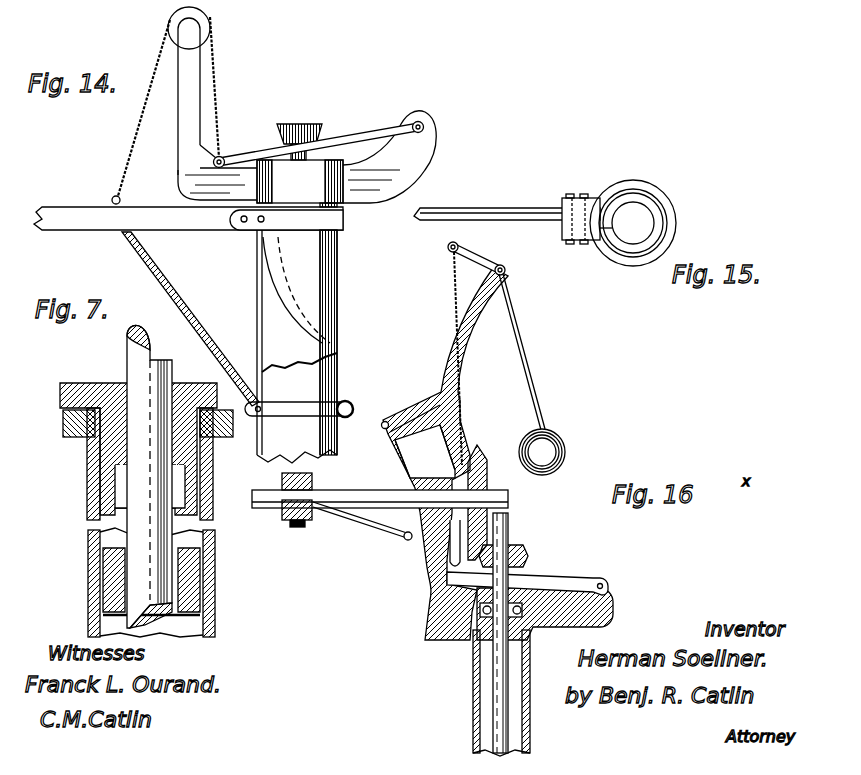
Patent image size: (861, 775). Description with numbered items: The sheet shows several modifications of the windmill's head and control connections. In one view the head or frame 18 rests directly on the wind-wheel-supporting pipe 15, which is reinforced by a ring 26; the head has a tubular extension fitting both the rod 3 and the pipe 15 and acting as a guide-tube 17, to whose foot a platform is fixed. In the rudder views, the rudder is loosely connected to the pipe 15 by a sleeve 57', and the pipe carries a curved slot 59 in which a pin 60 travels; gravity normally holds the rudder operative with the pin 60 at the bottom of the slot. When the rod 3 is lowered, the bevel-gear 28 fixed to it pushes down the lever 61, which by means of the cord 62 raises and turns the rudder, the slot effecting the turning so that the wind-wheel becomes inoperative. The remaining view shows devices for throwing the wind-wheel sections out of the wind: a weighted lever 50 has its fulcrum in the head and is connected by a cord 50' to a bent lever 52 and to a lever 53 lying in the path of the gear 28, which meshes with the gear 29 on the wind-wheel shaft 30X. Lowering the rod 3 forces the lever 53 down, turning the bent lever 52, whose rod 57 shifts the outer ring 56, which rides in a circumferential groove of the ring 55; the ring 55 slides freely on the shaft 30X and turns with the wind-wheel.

In FIG. 7, the rod 3 is at (149, 476).
In FIG. 16X, the rod 3 is at (492, 698).
In FIG. 14, the wind-wheel-supporting pipe 15 is at (338, 272).
In FIG. 7, the wind-wheel-supporting pipe 15 is at (88, 504).
In FIG. 15, the wind-wheel-supporting pipe 15 is at (662, 240).
In FIG. 16X, the guide-tube 17 is at (516, 693).
In FIG. 14, the head or frame 18 is at (182, 178).
In FIG. 16X, the head or frame 18 is at (440, 596).
In FIG. 7, the ring 26 is at (63, 432).
In FIG. 14, the bevel-gear 28 is at (299, 128).
In FIG. 16X, the bevel-gear 28 is at (523, 548).
In FIG. 16X, the gear 29 is at (487, 478).
In FIG. 16X, the wind-wheel shaft 30X is at (360, 498).
In FIG. 16X, the weighted lever 50 is at (532, 374).
In FIG. 16X, the cord 50' is at (461, 353).
In FIG. 16X, the bent lever 52 is at (425, 420).
In FIG. 16X, the lever 53 is at (540, 576).
In FIG. 16X, the ring 55 is at (282, 522).
In FIG. 16X, the outer ring 56 is at (299, 530).
In FIG. 16X, the rod 57 is at (362, 528).
In FIG. 14, the sleeve 57' is at (209, 219).
In FIG. 15, the sleeve 57' is at (535, 198).
In FIG. 14, the curved slot 59 is at (283, 285).
In FIG. 15, the curved slot 59 is at (608, 228).
In FIG. 15, the pin 60 is at (598, 262).
In FIG. 14, the lever 61 is at (352, 142).
In FIG. 14, the cord 62 is at (179, 105).